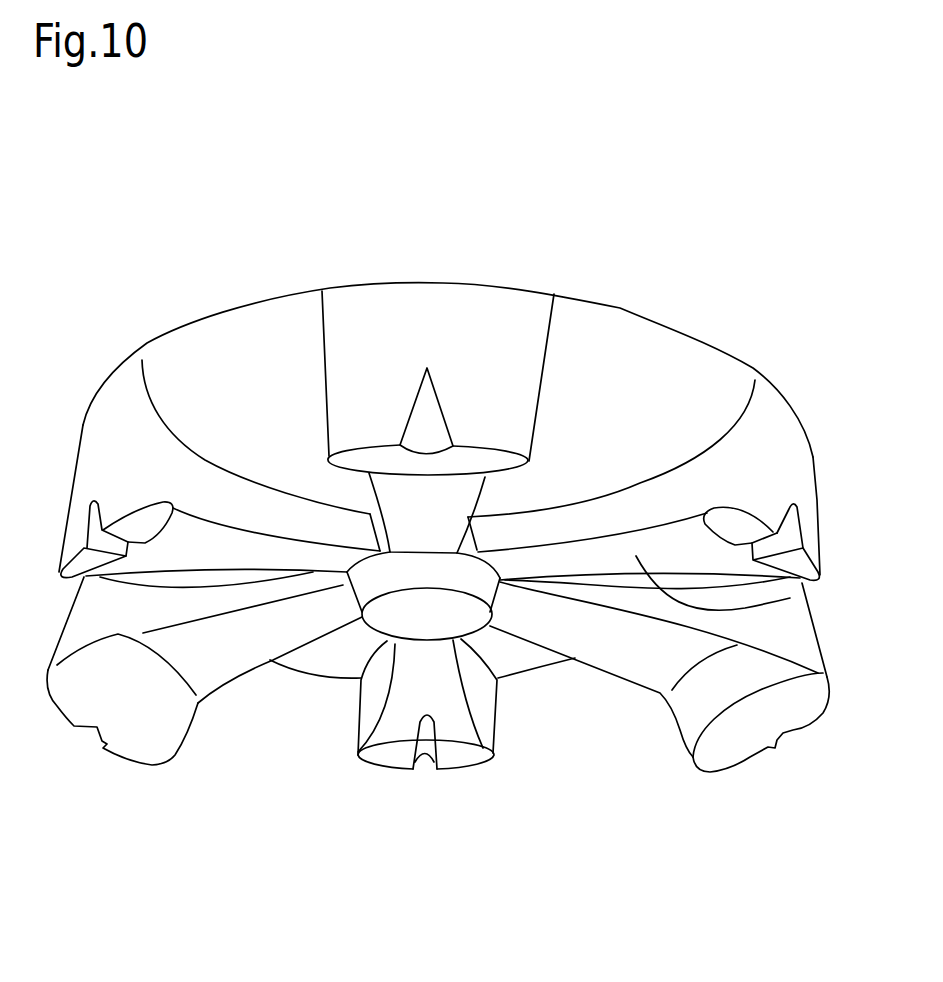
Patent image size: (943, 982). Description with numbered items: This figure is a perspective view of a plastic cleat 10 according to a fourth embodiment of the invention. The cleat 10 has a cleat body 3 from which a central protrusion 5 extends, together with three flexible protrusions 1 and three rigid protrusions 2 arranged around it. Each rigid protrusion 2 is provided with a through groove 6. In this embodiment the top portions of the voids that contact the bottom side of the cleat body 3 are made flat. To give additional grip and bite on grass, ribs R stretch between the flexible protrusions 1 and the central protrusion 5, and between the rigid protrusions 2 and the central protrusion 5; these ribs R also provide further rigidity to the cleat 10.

The cleat 10 is at (595, 256).
The cleat body 3 is at (662, 378).
The central protrusion 5 is at (440, 624).
The rigid protrusion 2 is at (457, 761).
The through groove 6 is at (419, 766).
The flexible protrusion 1 is at (735, 757).
The rib R is at (790, 598).